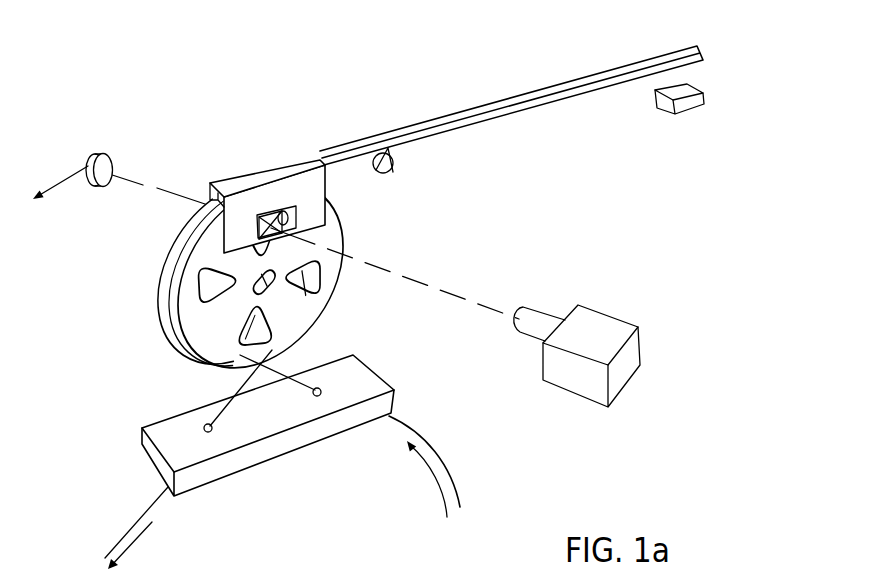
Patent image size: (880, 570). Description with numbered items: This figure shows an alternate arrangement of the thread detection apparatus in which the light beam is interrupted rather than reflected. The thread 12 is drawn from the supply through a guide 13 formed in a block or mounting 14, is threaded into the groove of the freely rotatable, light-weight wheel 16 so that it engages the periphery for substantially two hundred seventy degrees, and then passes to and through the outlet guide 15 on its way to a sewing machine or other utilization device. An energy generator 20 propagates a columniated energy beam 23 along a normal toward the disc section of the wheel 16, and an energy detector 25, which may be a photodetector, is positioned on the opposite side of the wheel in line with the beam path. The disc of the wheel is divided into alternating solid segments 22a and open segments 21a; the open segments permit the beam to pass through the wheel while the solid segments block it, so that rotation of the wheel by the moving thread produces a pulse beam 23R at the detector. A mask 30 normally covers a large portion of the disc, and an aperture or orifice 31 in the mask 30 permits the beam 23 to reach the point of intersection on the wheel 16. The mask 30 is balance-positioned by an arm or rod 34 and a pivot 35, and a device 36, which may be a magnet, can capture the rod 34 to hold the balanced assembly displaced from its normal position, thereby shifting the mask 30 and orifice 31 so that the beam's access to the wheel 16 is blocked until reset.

The thread 12 is at (453, 469).
The guide 13 is at (318, 388).
The block or mounting 14 is at (291, 456).
The outlet guide 15 is at (204, 425).
The wheel 16 is at (342, 229).
The energy generator 20 is at (610, 315).
The open segments 21a is at (288, 278).
The solid segments 22a is at (217, 332).
The energy beam 23 is at (411, 274).
The pulse beam 23R is at (187, 203).
The energy detector 25 is at (124, 166).
The mask 30 is at (250, 205).
The aperture or orifice 31 is at (275, 212).
The arm or rod 34 is at (490, 104).
The pivot 35 is at (396, 158).
The device 36 is at (683, 114).